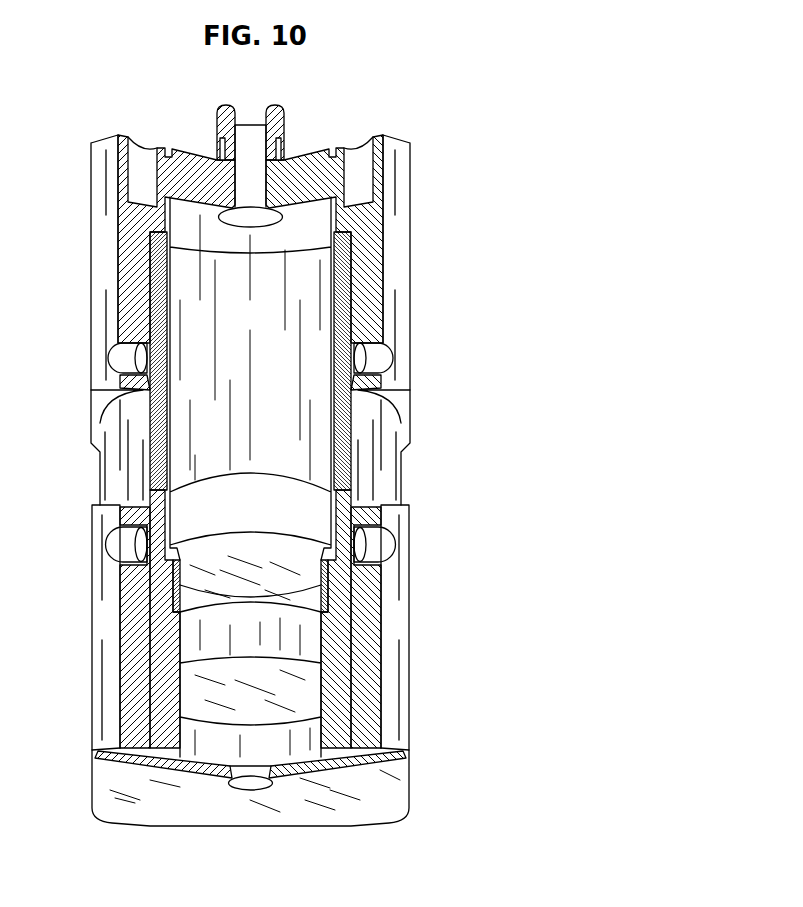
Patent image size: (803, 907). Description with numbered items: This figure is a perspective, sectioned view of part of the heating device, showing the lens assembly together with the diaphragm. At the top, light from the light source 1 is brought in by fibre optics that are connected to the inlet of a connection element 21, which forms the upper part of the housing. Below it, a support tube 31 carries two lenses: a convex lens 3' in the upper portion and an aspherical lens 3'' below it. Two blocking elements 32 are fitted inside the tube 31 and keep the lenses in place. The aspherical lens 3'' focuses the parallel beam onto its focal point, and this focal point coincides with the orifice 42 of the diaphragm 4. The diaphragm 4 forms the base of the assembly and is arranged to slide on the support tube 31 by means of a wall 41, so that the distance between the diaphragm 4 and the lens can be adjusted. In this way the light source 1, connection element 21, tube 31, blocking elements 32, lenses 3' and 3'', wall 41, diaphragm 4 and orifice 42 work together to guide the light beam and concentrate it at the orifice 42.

The light source 1 is at (296, 121).
The connection element 21 is at (397, 264).
The support tube 31 is at (384, 463).
The blocking elements 32 is at (334, 441).
The convex lens 3' is at (324, 398).
The aspherical lens 3'' is at (331, 679).
The wall 41 is at (107, 663).
The diaphragm 4 is at (320, 808).
The orifice 42 is at (236, 797).